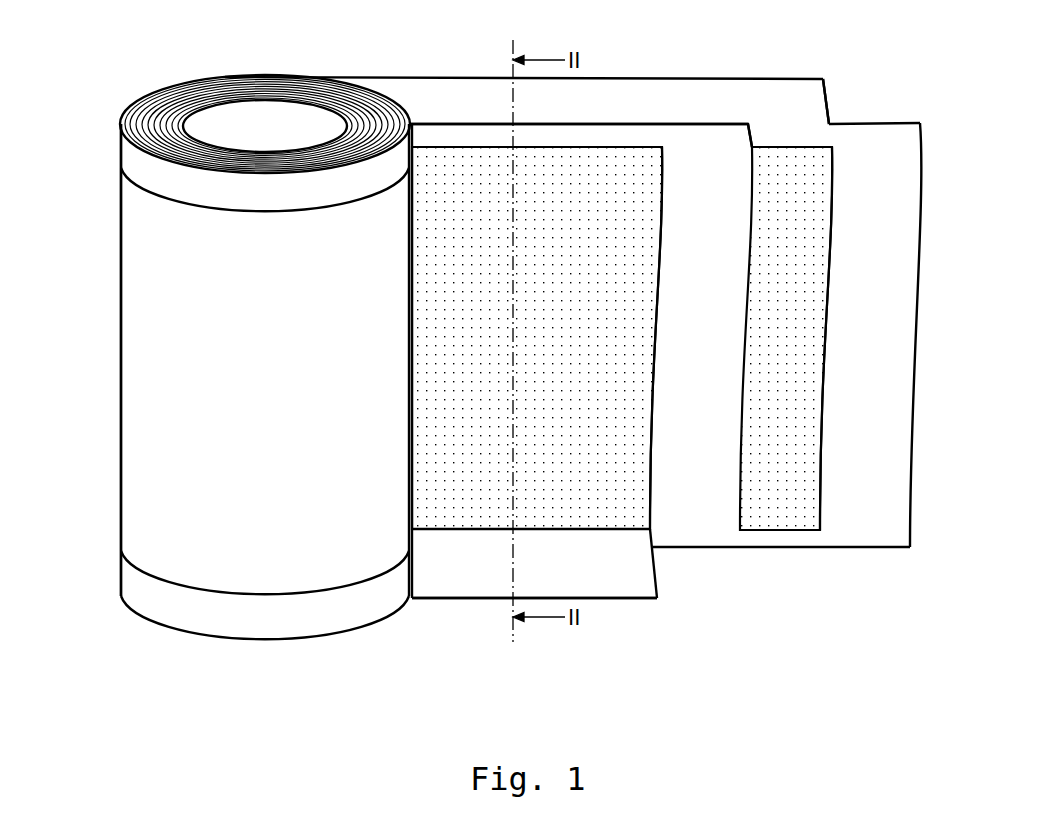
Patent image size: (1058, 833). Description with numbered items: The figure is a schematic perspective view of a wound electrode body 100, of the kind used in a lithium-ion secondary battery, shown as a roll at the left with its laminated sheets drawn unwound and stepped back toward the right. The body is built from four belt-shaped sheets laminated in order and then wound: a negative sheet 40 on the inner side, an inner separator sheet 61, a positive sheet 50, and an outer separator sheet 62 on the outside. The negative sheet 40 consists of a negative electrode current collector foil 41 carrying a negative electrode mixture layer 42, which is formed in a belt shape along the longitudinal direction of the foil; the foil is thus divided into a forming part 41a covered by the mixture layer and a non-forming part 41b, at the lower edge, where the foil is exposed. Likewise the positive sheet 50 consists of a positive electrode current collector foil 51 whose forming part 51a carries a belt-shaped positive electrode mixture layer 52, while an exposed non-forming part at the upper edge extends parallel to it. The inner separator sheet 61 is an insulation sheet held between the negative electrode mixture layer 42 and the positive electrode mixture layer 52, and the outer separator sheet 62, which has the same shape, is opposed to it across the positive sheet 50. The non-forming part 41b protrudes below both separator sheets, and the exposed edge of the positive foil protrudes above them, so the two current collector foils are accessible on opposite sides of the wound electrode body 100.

The wound electrode body 100 is at (244, 73).
The positive sheet 50 is at (789, 77).
The positive electrode current collector foil 51 is at (907, 187).
The forming part 51a is at (835, 167).
The positive electrode mixture layer 52 is at (828, 276).
The inner separator sheet 61 is at (703, 140).
The outer separator sheet 62 is at (127, 280).
The negative sheet 40 is at (614, 602).
The negative electrode current collector foil 41 is at (724, 500).
The forming part 41a is at (645, 505).
The non-forming part 41b is at (652, 578).
The negative electrode mixture layer 42 is at (653, 383).